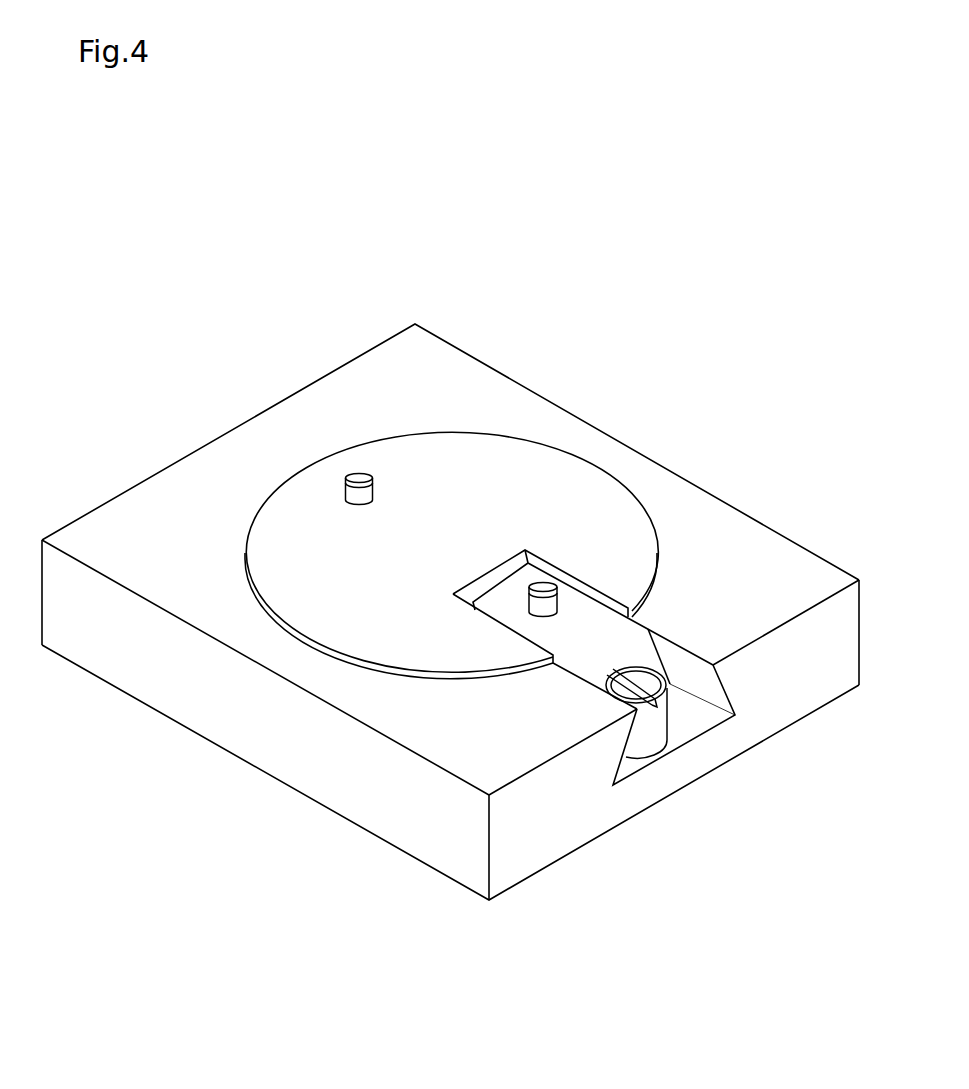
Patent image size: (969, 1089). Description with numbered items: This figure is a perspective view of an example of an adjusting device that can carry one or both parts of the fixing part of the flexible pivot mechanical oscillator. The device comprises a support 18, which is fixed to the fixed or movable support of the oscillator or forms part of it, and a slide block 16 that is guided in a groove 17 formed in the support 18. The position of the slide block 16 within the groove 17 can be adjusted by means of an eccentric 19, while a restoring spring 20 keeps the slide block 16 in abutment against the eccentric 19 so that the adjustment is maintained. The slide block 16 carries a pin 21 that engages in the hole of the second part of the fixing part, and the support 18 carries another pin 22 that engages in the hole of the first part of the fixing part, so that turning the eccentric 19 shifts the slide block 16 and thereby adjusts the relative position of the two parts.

The slide block 16 is at (627, 640).
The groove 17 is at (687, 668).
The support 18 is at (630, 807).
The eccentric 19 is at (665, 738).
The restoring spring 20 is at (490, 592).
The pin 21 is at (543, 583).
The pin 22 is at (359, 474).